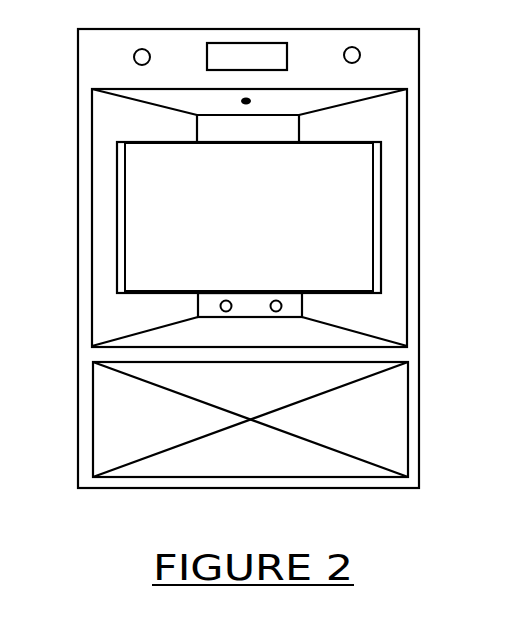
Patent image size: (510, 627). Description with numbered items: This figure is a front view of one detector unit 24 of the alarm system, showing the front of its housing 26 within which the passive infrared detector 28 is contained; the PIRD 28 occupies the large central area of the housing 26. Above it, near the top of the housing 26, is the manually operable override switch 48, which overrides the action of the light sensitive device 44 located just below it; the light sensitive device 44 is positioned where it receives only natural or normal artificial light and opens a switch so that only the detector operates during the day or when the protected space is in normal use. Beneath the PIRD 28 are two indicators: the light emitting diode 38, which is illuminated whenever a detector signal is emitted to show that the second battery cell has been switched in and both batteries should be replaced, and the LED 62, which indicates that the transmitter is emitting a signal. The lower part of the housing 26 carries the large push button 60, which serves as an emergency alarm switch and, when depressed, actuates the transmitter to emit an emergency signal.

The detector unit 24 is at (403, 50).
The housing 26 is at (78, 126).
The passive infrared detector 28 is at (320, 181).
The light emitting diode 38 is at (222, 300).
The light sensitive device 44 is at (246, 101).
The manually operable override switch 48 is at (278, 43).
The push button 60 is at (380, 427).
The LED 62 is at (279, 300).